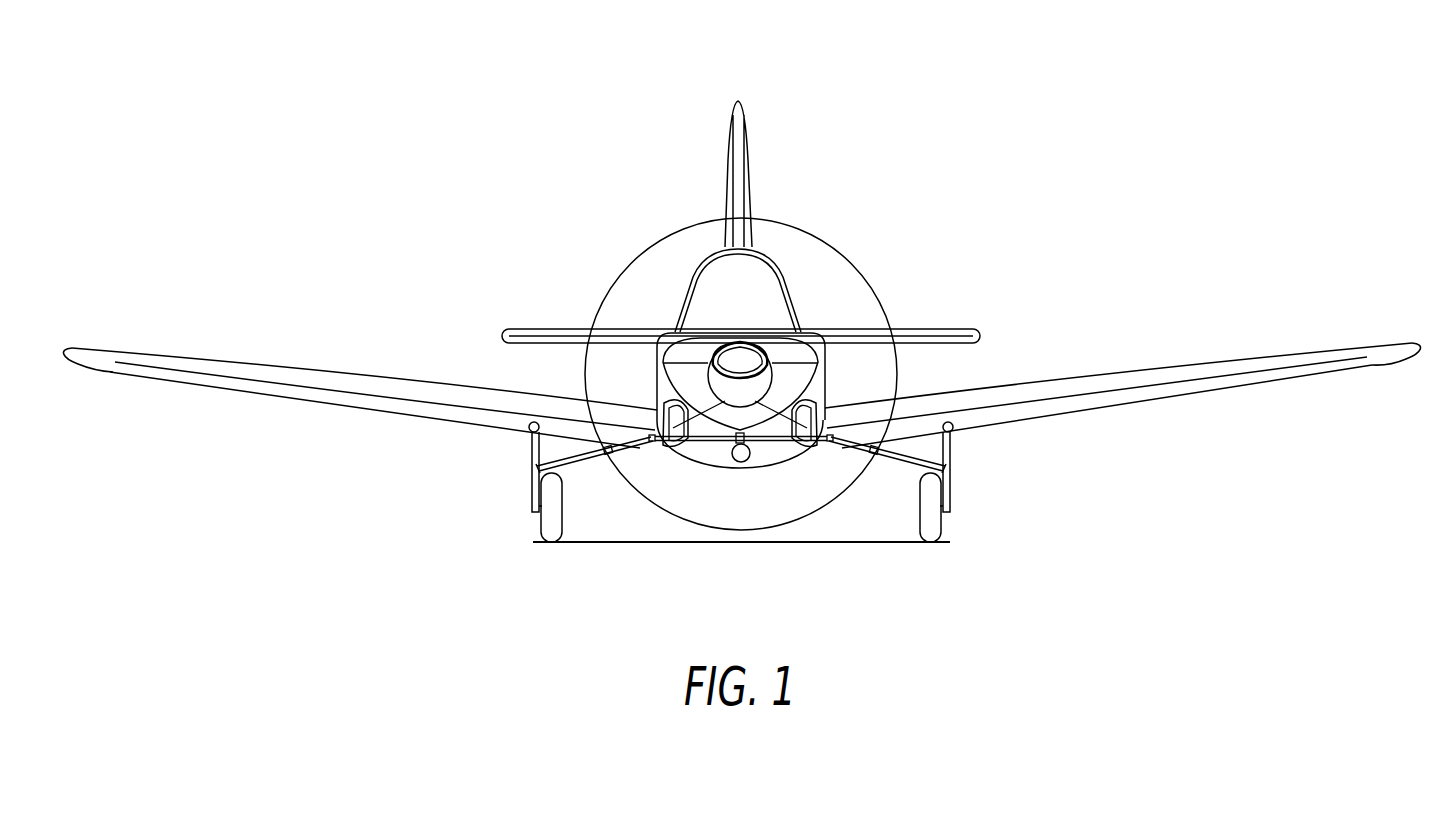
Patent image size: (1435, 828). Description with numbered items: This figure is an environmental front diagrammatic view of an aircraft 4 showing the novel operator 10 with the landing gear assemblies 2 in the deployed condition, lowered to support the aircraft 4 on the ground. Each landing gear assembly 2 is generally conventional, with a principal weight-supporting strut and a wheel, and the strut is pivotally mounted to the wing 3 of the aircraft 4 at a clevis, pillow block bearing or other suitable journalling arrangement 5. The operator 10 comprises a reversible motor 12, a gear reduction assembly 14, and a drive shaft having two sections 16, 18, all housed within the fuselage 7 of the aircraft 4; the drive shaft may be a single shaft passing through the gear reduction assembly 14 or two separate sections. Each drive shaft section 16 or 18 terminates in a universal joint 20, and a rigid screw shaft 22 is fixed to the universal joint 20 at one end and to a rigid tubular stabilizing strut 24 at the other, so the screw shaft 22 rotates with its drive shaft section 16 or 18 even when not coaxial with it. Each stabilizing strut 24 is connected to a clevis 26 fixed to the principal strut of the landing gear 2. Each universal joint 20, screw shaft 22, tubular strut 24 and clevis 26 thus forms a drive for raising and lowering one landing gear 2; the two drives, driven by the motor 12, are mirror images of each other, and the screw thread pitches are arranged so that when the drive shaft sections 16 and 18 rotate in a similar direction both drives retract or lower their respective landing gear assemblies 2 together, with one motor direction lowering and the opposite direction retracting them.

The operator 10 is at (928, 130).
The aircraft 4 is at (636, 168).
The wing 3 is at (330, 374).
The fuselage 7 is at (727, 468).
The gear reduction assembly 14 is at (740, 437).
The drive shaft section 16 is at (685, 437).
The drive shaft section 18 is at (787, 437).
The motor 12 is at (745, 462).
The screw shaft 22 is at (638, 447).
The universal joint 20 is at (646, 431).
The journalling arrangement 5 is at (513, 416).
The clevis 26 is at (549, 452).
The tubular stabilizing strut 24 is at (578, 462).
The landing gear assembly 2 is at (512, 468).